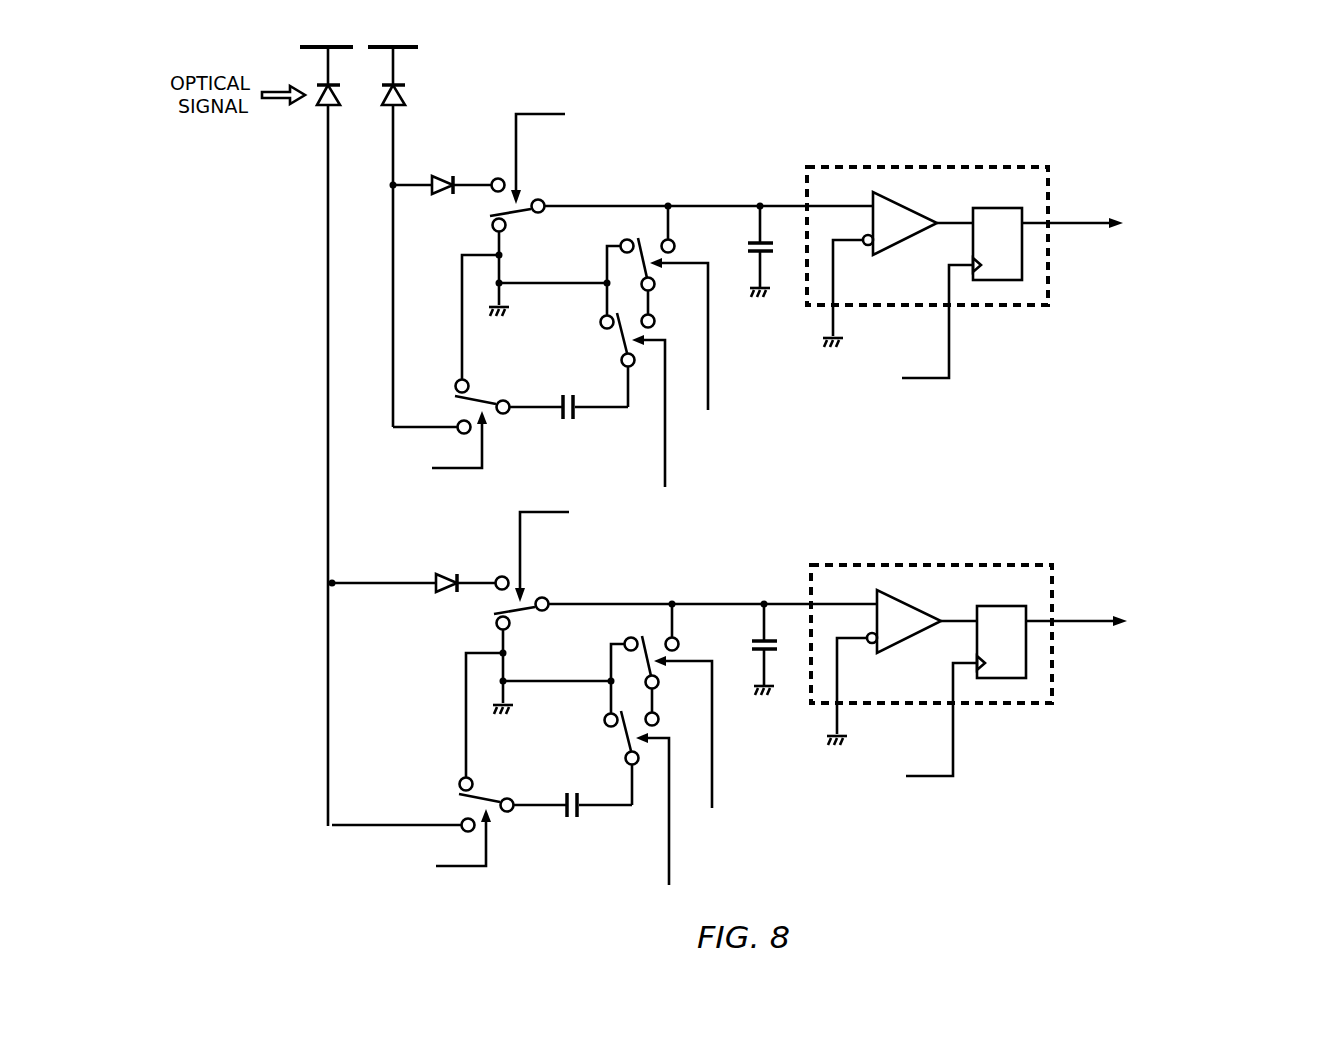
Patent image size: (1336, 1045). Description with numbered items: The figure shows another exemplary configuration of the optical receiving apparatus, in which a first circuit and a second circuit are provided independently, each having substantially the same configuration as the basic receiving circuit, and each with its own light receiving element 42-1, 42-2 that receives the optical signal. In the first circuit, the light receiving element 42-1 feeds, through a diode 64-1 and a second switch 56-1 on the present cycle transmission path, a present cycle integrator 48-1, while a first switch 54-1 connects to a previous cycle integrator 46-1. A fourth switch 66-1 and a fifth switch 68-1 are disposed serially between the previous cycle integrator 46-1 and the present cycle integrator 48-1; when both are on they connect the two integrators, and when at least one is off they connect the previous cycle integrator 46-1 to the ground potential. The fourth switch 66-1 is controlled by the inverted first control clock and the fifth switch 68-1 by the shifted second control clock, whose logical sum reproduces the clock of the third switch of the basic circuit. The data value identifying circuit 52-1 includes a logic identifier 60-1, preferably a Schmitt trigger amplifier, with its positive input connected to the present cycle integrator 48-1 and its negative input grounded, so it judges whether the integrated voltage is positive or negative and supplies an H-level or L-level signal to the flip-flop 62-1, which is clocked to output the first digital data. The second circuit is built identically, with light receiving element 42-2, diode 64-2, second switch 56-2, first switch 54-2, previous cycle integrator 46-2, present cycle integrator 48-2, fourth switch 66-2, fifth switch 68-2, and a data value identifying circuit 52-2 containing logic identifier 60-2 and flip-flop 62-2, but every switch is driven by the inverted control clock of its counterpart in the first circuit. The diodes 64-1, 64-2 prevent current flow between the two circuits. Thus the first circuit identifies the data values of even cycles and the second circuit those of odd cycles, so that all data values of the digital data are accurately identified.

The light receiving element 42-1 is at (403, 96).
The light receiving element 42-2 is at (320, 106).
The previous cycle integrator 46-1 is at (573, 419).
The previous cycle integrator 46-2 is at (578, 822).
The present cycle integrator 48-1 is at (750, 245).
The present cycle integrator 48-2 is at (722, 648).
The data value identifying circuit 52-1 is at (930, 167).
The data value identifying circuit 52-2 is at (931, 616).
The first switch 54-1 is at (505, 400).
The first switch 54-2 is at (454, 821).
The second switch 56-1 is at (540, 199).
The second switch 56-2 is at (685, 608).
The logic identifier 60-1 is at (906, 208).
The logic identifier 60-2 is at (902, 661).
The flip-flop 62-1 is at (1022, 265).
The flip-flop 62-2 is at (1084, 698).
The diode 64-1 is at (454, 176).
The diode 64-2 is at (419, 561).
The fourth switch 66-1 is at (620, 244).
The fourth switch 66-2 is at (633, 731).
The fifth switch 68-1 is at (605, 328).
The fifth switch 68-2 is at (615, 811).